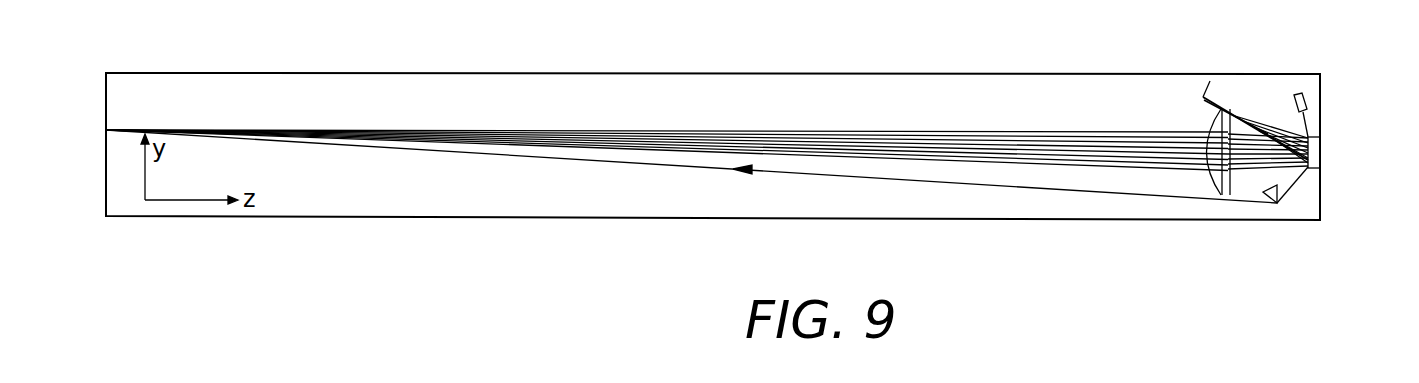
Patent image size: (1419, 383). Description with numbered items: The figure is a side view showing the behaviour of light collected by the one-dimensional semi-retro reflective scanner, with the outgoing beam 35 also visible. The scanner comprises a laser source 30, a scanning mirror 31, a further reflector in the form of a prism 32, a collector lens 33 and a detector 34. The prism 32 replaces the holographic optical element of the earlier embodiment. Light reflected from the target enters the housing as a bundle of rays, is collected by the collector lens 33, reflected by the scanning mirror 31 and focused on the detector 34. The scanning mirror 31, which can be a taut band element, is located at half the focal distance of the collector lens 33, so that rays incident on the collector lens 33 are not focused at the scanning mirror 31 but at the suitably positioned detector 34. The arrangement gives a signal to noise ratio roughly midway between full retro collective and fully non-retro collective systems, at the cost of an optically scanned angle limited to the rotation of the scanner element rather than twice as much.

The laser source 30 is at (1305, 98).
The scanning mirror 31 is at (1321, 152).
The prism 32 is at (1278, 192).
The collector lens 33 is at (1204, 122).
The detector 34 is at (1210, 81).
The outgoing beam 35 is at (808, 177).